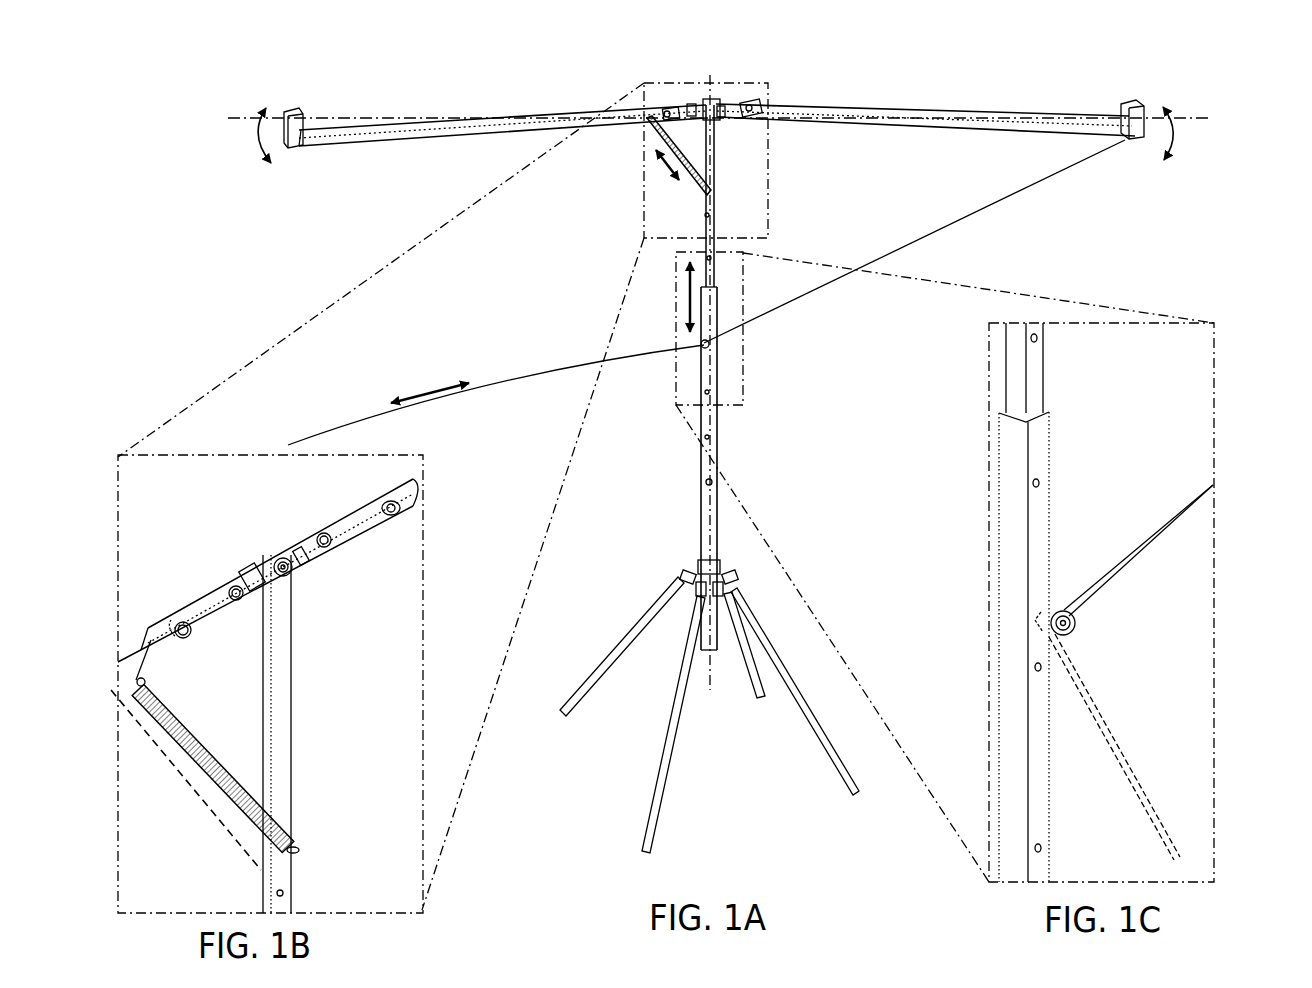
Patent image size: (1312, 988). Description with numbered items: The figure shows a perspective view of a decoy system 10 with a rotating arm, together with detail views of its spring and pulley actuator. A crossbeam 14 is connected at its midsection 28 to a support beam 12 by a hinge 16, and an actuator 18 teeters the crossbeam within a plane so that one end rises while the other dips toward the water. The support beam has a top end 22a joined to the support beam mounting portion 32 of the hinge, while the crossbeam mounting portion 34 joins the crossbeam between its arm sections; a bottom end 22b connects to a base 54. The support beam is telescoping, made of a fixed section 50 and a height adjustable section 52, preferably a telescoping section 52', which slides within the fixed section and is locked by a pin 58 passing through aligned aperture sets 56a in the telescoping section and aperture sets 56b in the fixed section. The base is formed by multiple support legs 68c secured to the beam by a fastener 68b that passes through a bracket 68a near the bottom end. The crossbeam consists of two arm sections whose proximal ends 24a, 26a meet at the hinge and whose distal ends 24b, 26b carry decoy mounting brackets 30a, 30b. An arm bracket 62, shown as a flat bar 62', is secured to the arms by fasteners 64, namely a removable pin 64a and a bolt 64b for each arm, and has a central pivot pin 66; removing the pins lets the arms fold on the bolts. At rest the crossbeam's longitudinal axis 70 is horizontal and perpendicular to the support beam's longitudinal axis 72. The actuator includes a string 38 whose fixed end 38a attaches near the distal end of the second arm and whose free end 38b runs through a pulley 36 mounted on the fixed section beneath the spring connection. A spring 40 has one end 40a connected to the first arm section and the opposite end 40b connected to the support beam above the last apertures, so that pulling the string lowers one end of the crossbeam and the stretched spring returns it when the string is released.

In FIG. 1A, the decoy system 10 is at (184, 50).
In FIG. 1A, the support beam 12 is at (702, 497).
In FIG. 1A, the crossbeam 14 is at (408, 127).
In FIG. 1A, the hinge 16 is at (720, 105).
In FIG. 1A, the actuator 18 is at (650, 143).
In FIG. 1A, the top end 22a is at (709, 105).
In FIG. 1A, the bottom end 22b is at (701, 562).
In FIG. 1B, the proximal end of first arm section 24a is at (150, 647).
In FIG. 1A, the distal end of first arm section 24b is at (295, 146).
In FIG. 1B, the proximal end of second arm section 26a is at (367, 522).
In FIG. 1A, the distal end of second arm section 26b is at (1143, 132).
In FIG. 1B, the midsection 28 is at (277, 557).
In FIG. 1A, the decoy mounting bracket 30a is at (294, 118).
In FIG. 1A, the decoy mounting bracket 30b is at (1128, 110).
In FIG. 1B, the support beam mounting portion 32 is at (300, 567).
In FIG. 1B, the crossbeam mounting portion 34 is at (283, 572).
In FIG. 1C, the pulley 36 is at (1058, 622).
In FIG. 1C, the string 38 is at (1185, 508).
In FIG. 1A, the fixed end of string 38a is at (1127, 140).
In FIG. 1A, the free end of string 38b is at (287, 445).
In FIG. 1B, the spring 40 is at (208, 757).
In FIG. 1B, the first end of spring 40a is at (137, 676).
In FIG. 1B, the second end of spring 40b is at (295, 848).
In FIG. 1C, the fixed section 50 is at (1015, 575).
In FIG. 1A, the height adjustable section 52 is at (736, 196).
In FIG. 1C, the telescoping section 52' is at (973, 359).
In FIG. 1A, the base 54 is at (627, 745).
In FIG. 1A, the aperture sets 56a is at (707, 259).
In FIG. 1A, the aperture sets 56b is at (706, 392).
In FIG. 1A, the pin 58 is at (709, 482).
In FIG. 1A, the arm bracket 62 is at (672, 85).
In FIG. 1B, the flat bar 62' is at (232, 536).
In FIG. 1B, the fasteners 64 is at (186, 635).
In FIG. 1B, the pin 64a is at (392, 508).
In FIG. 1B, the bolt 64b is at (325, 537).
In FIG. 1B, the central pivot pin 66 is at (288, 569).
In FIG. 1A, the bracket 68a is at (700, 580).
In FIG. 1A, the fastener 68b is at (712, 563).
In FIG. 1A, the support legs 68c is at (793, 705).
In FIG. 1A, the longitudinal axis of crossbeam 70 is at (1183, 118).
In FIG. 1A, the longitudinal axis of support beam 72 is at (709, 660).